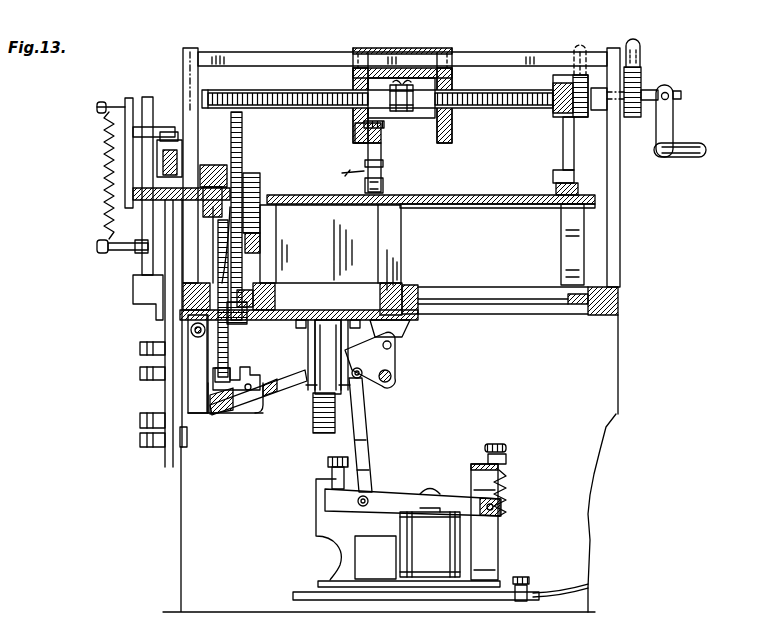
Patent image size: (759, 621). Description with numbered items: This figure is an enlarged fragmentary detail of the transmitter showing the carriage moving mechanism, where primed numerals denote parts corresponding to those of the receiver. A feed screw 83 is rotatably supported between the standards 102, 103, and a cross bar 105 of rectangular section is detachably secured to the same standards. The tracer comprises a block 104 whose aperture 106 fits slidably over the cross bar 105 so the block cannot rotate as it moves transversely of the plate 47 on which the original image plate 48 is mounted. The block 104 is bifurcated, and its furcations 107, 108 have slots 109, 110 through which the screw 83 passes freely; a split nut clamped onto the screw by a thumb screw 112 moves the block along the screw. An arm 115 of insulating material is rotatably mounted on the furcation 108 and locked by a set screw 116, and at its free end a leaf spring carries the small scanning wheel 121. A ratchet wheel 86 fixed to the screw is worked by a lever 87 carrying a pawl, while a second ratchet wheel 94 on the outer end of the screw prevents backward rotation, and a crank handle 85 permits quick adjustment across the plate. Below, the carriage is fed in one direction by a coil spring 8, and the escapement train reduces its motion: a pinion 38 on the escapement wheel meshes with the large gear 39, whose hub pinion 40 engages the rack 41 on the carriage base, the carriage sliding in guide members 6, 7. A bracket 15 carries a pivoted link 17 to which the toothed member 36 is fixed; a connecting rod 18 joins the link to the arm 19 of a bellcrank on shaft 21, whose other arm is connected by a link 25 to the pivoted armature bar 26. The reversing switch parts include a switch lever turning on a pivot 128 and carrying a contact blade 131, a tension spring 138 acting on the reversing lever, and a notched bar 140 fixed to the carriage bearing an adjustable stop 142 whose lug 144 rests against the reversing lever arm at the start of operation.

The standard 102 is at (185, 72).
The standard 103 is at (614, 160).
The block 104 is at (402, 38).
The cross bar 105 is at (500, 45).
The aperture 106 is at (355, 48).
The furcation 107 is at (452, 126).
The furcation 108 is at (355, 142).
The slot 109 is at (450, 81).
The slot 110 is at (353, 80).
The thumb screw 112 is at (402, 118).
The arm 115 is at (360, 163).
The set screw 116 is at (382, 130).
The scanning wheel 121 is at (362, 190).
The pivot 128 is at (185, 446).
The contact blade 131 is at (228, 348).
The tension spring 138 is at (105, 192).
The notched bar 140 is at (173, 163).
The stop 142 is at (178, 132).
The lug 144 is at (140, 107).
The screw 83 is at (300, 108).
The large gear 39 is at (242, 137).
The pinion 40 is at (262, 171).
The rack 41 is at (259, 246).
The guide member 6 is at (267, 279).
The guide member 7 is at (397, 285).
The image plate 48 is at (443, 195).
The plate 47 is at (486, 208).
The ratchet wheel 86 is at (579, 117).
The lever 87 is at (563, 143).
The ratchet wheel 94 is at (681, 96).
The handle 85 is at (692, 145).
The bracket 15 is at (191, 327).
The link 17 is at (198, 409).
The connecting rod 18 is at (282, 383).
The arm 19 is at (396, 358).
The shaft 21 is at (393, 380).
The link 25 is at (362, 419).
The armature bar 26 is at (388, 492).
The coil spring 8 is at (322, 433).
The member 36 is at (240, 373).
The pinion 38 is at (240, 332).